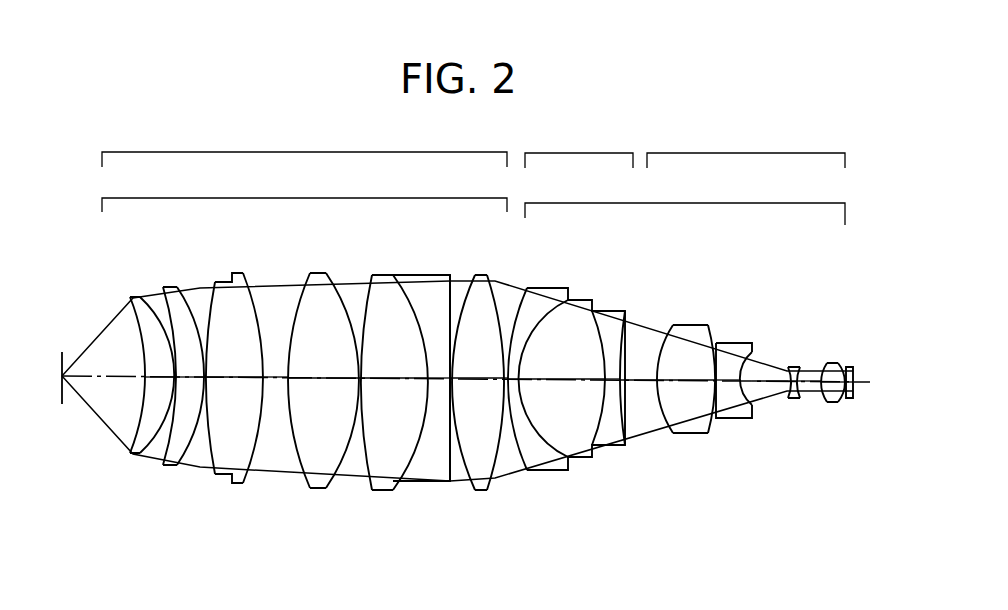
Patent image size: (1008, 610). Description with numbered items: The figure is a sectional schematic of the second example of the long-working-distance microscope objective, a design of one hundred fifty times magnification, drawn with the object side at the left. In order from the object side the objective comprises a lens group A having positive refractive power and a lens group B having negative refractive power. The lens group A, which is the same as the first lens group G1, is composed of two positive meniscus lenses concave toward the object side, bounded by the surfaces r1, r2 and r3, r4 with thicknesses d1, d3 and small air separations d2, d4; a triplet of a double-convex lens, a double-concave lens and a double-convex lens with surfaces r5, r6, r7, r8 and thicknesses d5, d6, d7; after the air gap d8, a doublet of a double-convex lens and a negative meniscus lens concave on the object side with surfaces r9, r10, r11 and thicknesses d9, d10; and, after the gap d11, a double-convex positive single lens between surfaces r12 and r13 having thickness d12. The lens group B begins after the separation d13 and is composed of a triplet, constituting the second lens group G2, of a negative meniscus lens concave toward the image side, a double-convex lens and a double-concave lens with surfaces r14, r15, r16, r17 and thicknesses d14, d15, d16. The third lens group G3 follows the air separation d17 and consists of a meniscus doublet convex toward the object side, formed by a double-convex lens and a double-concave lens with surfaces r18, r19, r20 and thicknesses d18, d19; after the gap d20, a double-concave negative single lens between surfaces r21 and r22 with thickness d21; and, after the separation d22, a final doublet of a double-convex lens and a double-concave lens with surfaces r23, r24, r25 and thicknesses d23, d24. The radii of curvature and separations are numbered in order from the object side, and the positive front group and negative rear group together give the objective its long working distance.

The first lens group G1 is at (304, 142).
The second lens group G2 is at (579, 142).
The third lens group G3 is at (746, 142).
The lens group A is at (304, 189).
The lens group B is at (685, 198).
The radius of curvature of the first lens surface r1 is at (130, 298).
The radius of curvature of the second lens surface r2 is at (141, 297).
The radius of curvature of the third lens surface r3 is at (165, 287).
The radius of curvature of the fourth lens surface r4 is at (178, 287).
The radius of curvature of the fifth lens surface r5 is at (215, 282).
The radius of curvature of the sixth lens surface r6 is at (244, 273).
The radius of curvature of the seventh lens surface r7 is at (310, 273).
The radius of curvature of the eighth lens surface r8 is at (327, 273).
The radius of curvature of the ninth lens surface r9 is at (372, 275).
The radius of curvature of the tenth lens surface r10 is at (394, 275).
The radius of curvature of the eleventh lens surface r11 is at (448, 275).
The radius of curvature of the twelfth lens surface r12 is at (476, 275).
The radius of curvature of the thirteenth lens surface r13 is at (489, 275).
The radius of curvature of the fourteenth lens surface r14 is at (528, 288).
The radius of curvature of the fifteenth lens surface r15 is at (569, 300).
The radius of curvature of the sixteenth lens surface r16 is at (594, 311).
The radius of curvature of the seventeenth lens surface r17 is at (626, 311).
The radius of curvature of the eighteenth lens surface r18 is at (673, 325).
The radius of curvature of the nineteenth lens surface r19 is at (709, 325).
The radius of curvature of the twentieth lens surface r20 is at (751, 350).
The radius of curvature of the twenty-first lens surface r21 is at (789, 366).
The radius of curvature of the twenty-second lens surface r22 is at (800, 366).
The radius of curvature of the twenty-third lens surface r23 is at (826, 363).
The radius of curvature of the twenty-fourth lens surface r24 is at (840, 363).
The radius of curvature of the twenty-fifth lens surface r25 is at (853, 367).
The separation between the first and second lens surfaces d1 is at (152, 380).
The separation between the second and third lens surfaces d2 is at (175, 380).
The separation between the third and fourth lens surfaces d3 is at (188, 380).
The separation between the fourth and fifth lens surfaces d4 is at (205, 380).
The separation between the fifth and sixth lens surfaces d5 is at (233, 380).
The separation between the sixth and seventh lens surfaces d6 is at (277, 380).
The separation between the seventh and eighth lens surfaces d7 is at (327, 380).
The separation between the eighth and ninth lens surfaces d8 is at (360, 380).
The separation between the ninth and tenth lens surfaces d9 is at (390, 380).
The separation between the tenth and eleventh lens surfaces d10 is at (440, 380).
The separation between the eleventh and twelfth lens surfaces d11 is at (451, 380).
The separation between the twelfth and thirteenth lens surfaces d12 is at (478, 380).
The separation between the thirteenth and fourteenth lens surfaces d13 is at (506, 380).
The separation between the fourteenth and fifteenth lens surfaces d14 is at (513, 382).
The separation between the fifteenth and sixteenth lens surfaces d15 is at (560, 382).
The separation between the sixteenth and seventeenth lens surfaces d16 is at (612, 382).
The separation between the seventeenth and eighteenth lens surfaces d17 is at (625, 384).
The separation between the eighteenth and nineteenth lens surfaces d18 is at (686, 384).
The separation between the nineteenth and twentieth lens surfaces d19 is at (728, 384).
The separation between the twentieth and twenty-first lens surfaces d20 is at (770, 384).
The separation between the twenty-first and twenty-second lens surfaces d21 is at (794, 392).
The separation between the twenty-second and twenty-third lens surfaces d22 is at (811, 392).
The separation between the twenty-third and twenty-fourth lens surfaces d23 is at (832, 402).
The separation between the twenty-fourth and twenty-fifth lens surfaces d24 is at (848, 400).